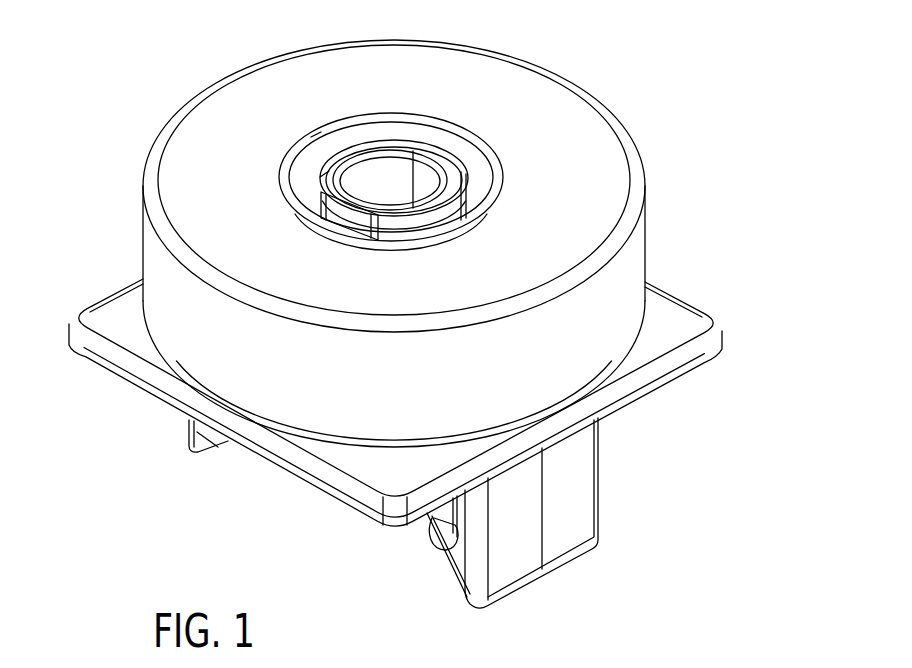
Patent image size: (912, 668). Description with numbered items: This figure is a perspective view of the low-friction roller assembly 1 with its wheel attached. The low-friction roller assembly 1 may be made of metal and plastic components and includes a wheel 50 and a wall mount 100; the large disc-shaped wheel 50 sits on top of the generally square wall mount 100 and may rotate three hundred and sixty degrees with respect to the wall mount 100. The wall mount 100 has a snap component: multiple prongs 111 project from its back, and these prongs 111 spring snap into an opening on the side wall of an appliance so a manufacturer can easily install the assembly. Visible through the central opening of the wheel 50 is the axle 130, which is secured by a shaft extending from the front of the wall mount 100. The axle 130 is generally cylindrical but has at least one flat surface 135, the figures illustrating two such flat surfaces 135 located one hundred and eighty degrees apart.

The low-friction roller assembly 1 is at (120, 44).
The wheel 50 is at (577, 128).
The wall mount 100 is at (678, 317).
The prongs 111 is at (578, 480).
The axle 130 is at (462, 218).
The flat surface 135 is at (426, 170).